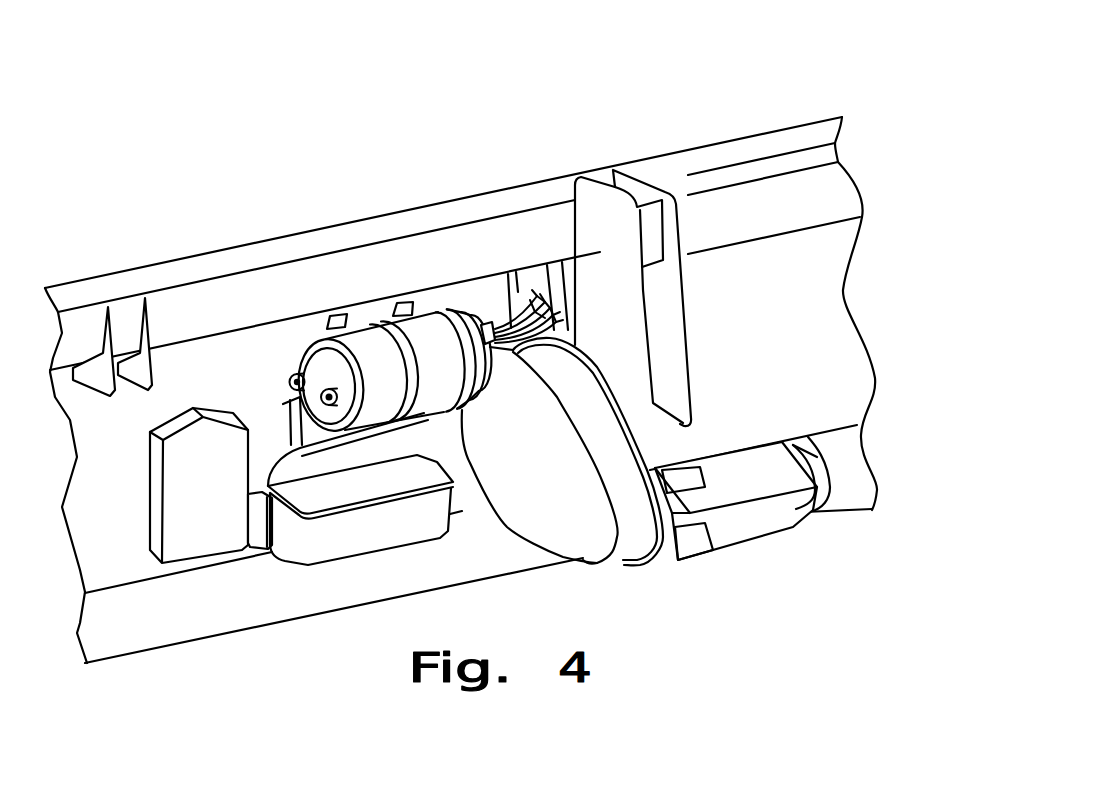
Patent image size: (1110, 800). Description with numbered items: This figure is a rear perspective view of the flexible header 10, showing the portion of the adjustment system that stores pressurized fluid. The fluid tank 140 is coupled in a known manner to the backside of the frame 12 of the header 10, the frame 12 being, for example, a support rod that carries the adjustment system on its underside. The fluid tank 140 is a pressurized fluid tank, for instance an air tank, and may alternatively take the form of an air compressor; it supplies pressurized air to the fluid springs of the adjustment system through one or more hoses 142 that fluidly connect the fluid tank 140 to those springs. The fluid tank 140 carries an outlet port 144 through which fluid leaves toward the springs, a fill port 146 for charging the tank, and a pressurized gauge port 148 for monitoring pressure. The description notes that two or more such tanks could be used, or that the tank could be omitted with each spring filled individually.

The header 10 is at (461, 340).
The frame 12 is at (152, 280).
The fluid tank 140 is at (393, 337).
The hose 142 is at (530, 307).
The outlet port 144 is at (481, 318).
The fill port 146 is at (321, 381).
The pressurized gauge port 148 is at (290, 380).